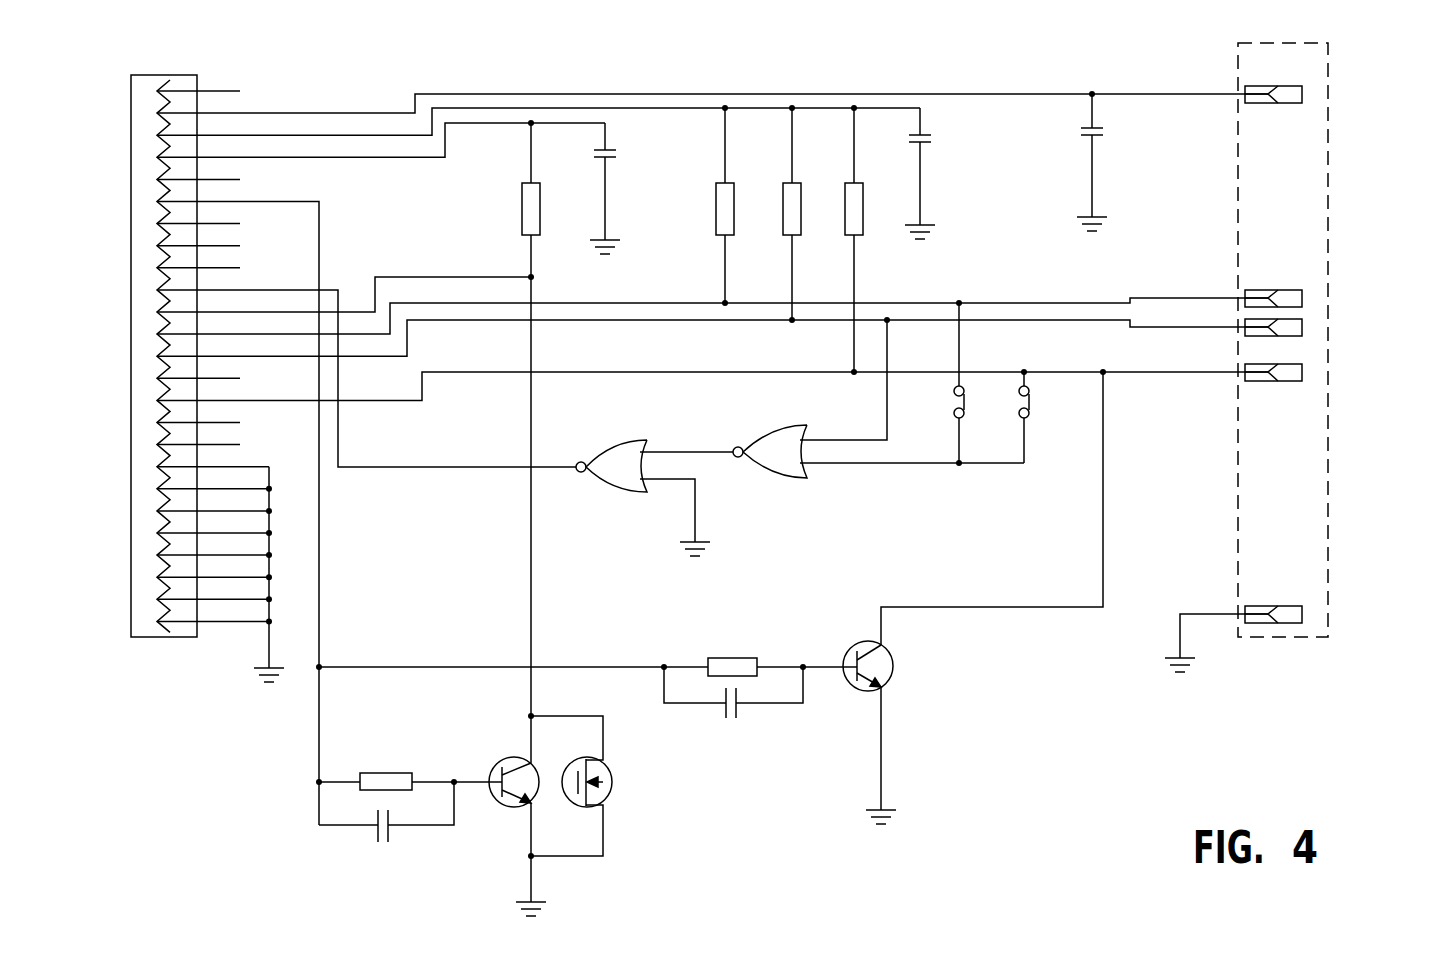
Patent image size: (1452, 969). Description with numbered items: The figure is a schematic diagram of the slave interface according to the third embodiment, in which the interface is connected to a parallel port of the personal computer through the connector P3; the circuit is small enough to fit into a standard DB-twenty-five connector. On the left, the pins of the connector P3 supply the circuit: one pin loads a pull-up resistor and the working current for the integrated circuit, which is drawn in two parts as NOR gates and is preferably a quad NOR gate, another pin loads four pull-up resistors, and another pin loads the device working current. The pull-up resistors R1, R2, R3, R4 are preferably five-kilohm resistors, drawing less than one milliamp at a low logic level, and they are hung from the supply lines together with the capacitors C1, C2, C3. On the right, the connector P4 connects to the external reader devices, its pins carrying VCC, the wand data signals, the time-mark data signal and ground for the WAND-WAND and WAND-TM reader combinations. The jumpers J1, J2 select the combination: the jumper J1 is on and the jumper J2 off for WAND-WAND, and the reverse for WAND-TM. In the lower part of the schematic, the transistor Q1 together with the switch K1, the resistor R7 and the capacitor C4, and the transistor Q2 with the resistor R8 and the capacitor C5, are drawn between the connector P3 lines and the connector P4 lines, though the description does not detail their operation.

The connector P3 is at (152, 75).
The connector P4 is at (1295, 62).
The pull-up resistor R1 is at (519, 441).
The pull-up resistor R2 is at (713, 205).
The pull-up resistor R3 is at (779, 214).
The pull-up resistor R4 is at (842, 240).
The resistor R7 is at (386, 770).
The resistor R8 is at (561, 656).
The capacitor C1 is at (1106, 161).
The capacitor C2 is at (934, 173).
The capacitor C3 is at (619, 188).
The capacitor C4 is at (386, 824).
The capacitor C5 is at (733, 706).
The jumper J1 is at (971, 383).
The jumper J2 is at (1036, 416).
The transistor Q1 is at (500, 827).
The transistor Q2 is at (954, 596).
The MOSFET switch K1 is at (581, 786).